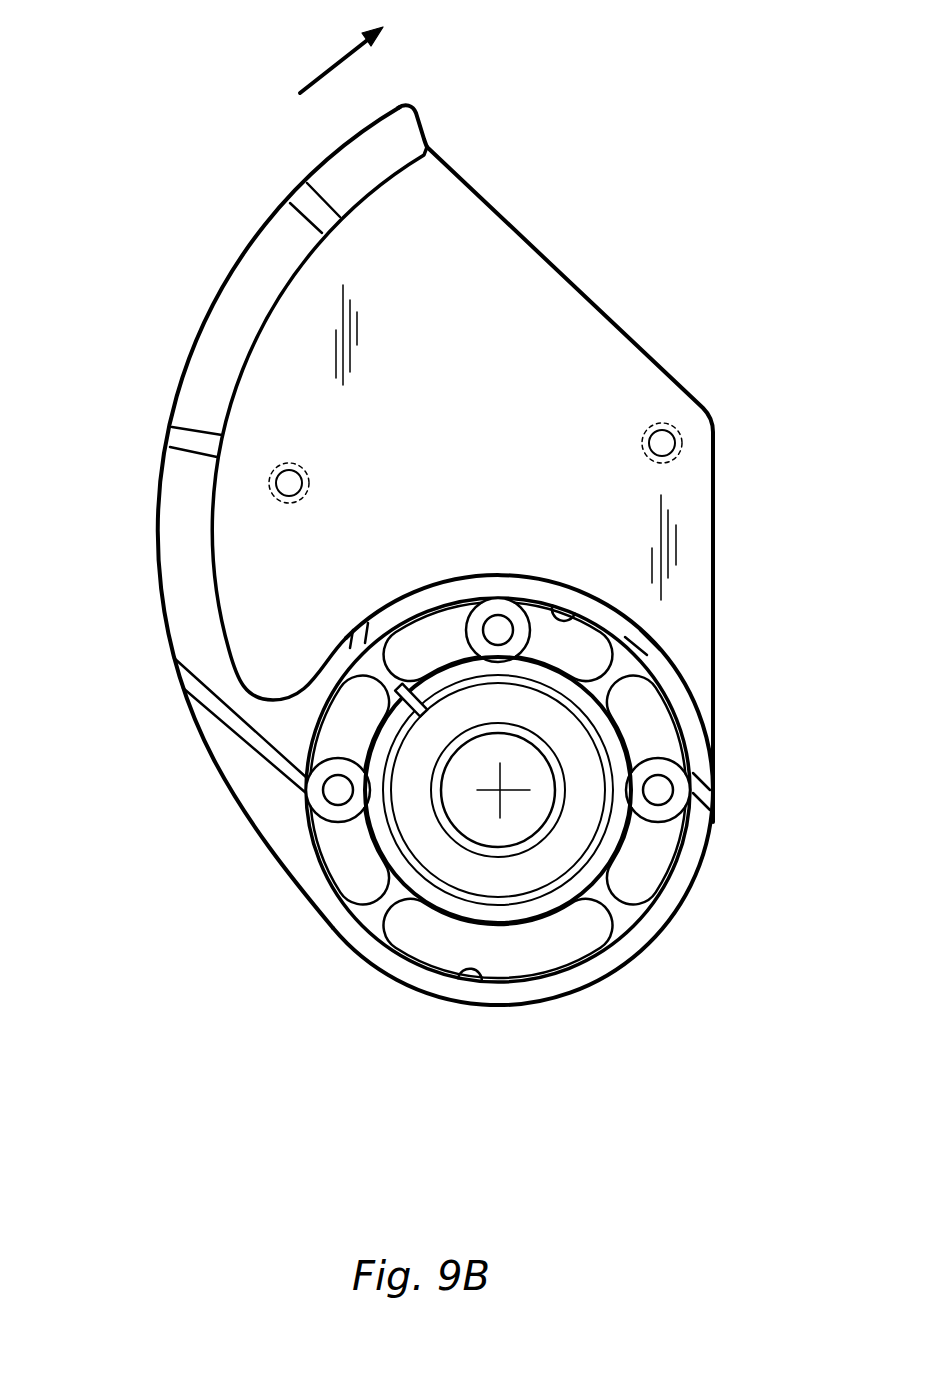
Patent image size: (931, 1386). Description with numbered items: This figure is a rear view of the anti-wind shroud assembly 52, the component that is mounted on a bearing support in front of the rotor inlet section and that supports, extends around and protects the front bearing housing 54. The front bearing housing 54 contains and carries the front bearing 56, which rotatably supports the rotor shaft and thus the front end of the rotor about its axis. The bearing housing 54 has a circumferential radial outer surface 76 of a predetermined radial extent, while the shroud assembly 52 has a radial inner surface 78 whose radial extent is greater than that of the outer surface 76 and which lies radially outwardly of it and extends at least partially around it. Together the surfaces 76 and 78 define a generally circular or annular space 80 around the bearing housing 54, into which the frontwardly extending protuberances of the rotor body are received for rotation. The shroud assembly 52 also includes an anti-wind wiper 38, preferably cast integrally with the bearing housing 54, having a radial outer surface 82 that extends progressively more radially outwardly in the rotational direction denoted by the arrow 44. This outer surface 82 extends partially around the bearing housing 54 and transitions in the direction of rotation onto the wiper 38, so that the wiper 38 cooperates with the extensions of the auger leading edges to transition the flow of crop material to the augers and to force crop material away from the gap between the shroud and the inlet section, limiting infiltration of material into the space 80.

The rotational direction arrow 44 is at (333, 60).
The anti-wind shroud assembly 52 is at (205, 323).
The anti-wind wiper 38 is at (222, 787).
The front bearing housing 54 is at (418, 905).
The front bearing 56 is at (582, 768).
The annular space 80 is at (352, 862).
The radial outer surface of bearing housing 76 is at (555, 925).
The radial inner surface 78 is at (488, 980).
The radial outer surface 82 is at (288, 207).